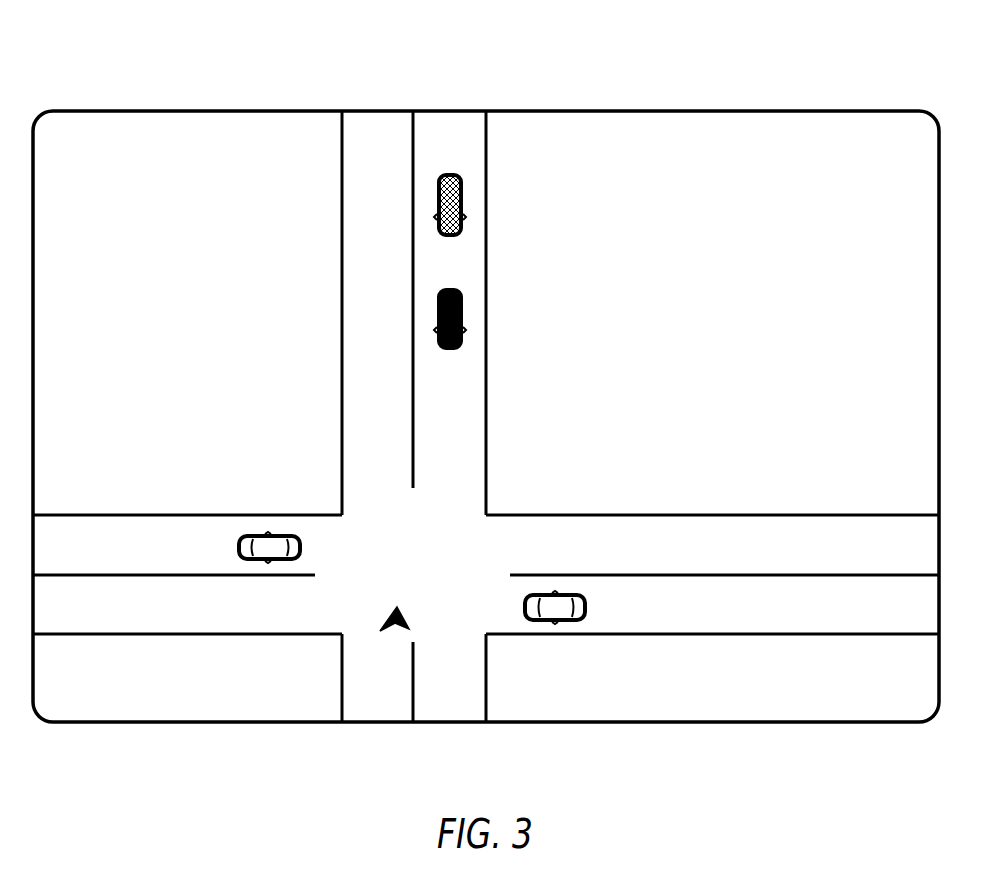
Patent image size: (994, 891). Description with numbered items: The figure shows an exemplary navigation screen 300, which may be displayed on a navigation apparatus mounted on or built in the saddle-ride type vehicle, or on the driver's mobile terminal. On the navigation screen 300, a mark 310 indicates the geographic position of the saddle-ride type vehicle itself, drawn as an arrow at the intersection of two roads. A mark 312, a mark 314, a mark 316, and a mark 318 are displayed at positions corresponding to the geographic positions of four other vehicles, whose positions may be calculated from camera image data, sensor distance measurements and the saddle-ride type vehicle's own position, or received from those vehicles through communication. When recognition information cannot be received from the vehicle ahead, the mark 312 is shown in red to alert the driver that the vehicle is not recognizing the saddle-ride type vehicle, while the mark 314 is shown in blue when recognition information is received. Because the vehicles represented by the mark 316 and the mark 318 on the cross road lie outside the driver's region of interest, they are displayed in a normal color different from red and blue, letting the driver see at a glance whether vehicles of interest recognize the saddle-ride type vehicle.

The navigation screen 300 is at (743, 111).
The mark 310 is at (409, 619).
The mark 312 is at (462, 291).
The mark 314 is at (462, 176).
The mark 316 is at (266, 535).
The mark 318 is at (553, 622).